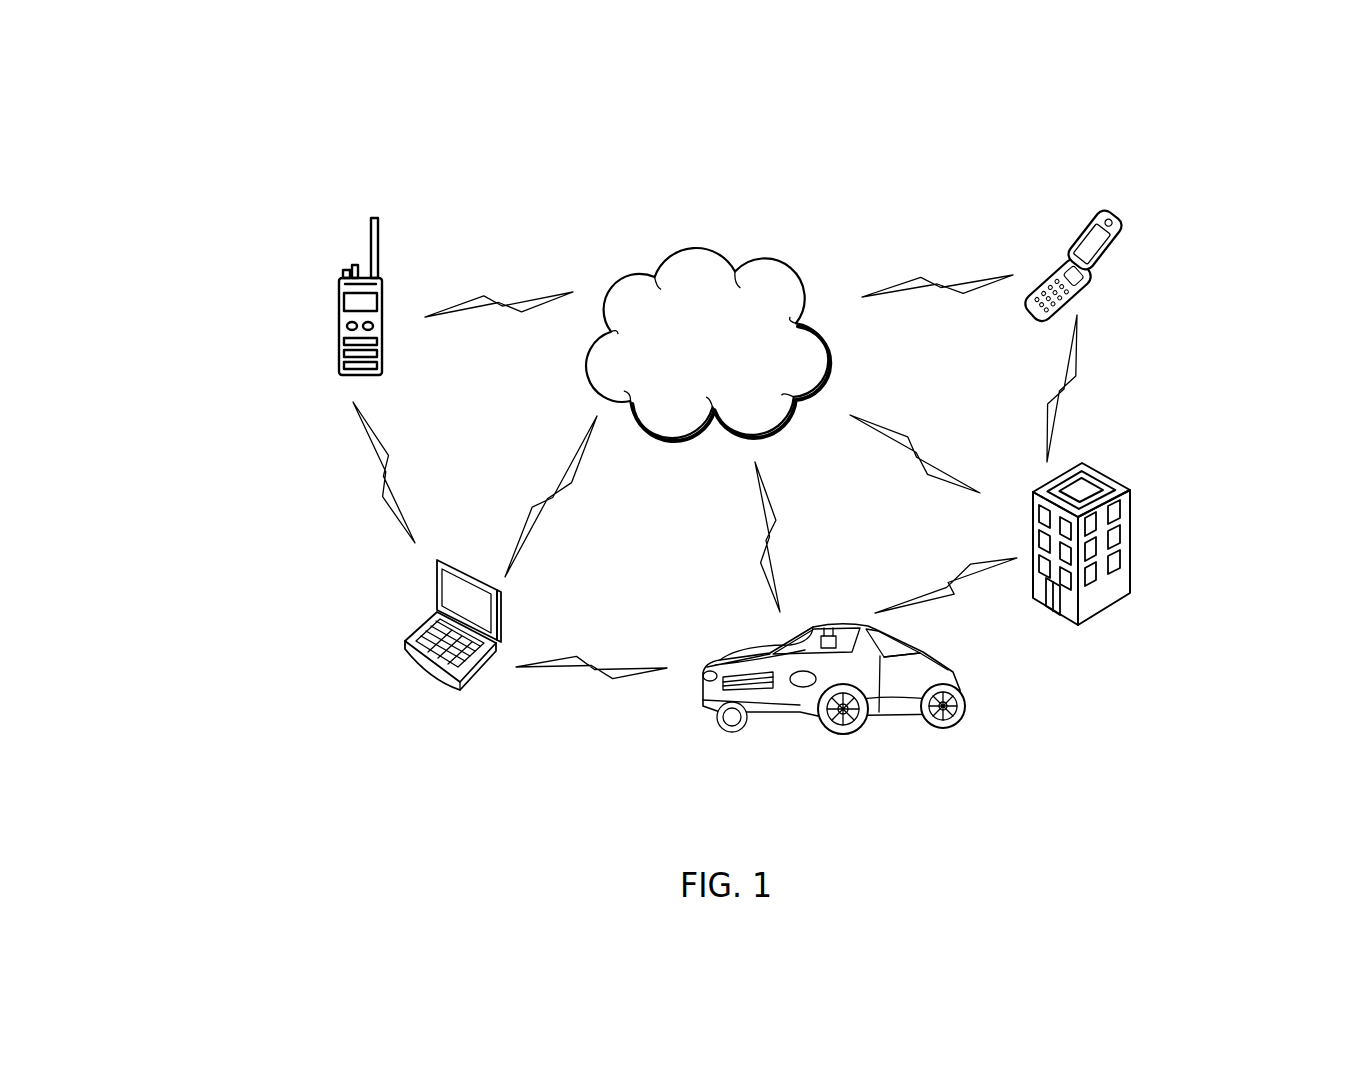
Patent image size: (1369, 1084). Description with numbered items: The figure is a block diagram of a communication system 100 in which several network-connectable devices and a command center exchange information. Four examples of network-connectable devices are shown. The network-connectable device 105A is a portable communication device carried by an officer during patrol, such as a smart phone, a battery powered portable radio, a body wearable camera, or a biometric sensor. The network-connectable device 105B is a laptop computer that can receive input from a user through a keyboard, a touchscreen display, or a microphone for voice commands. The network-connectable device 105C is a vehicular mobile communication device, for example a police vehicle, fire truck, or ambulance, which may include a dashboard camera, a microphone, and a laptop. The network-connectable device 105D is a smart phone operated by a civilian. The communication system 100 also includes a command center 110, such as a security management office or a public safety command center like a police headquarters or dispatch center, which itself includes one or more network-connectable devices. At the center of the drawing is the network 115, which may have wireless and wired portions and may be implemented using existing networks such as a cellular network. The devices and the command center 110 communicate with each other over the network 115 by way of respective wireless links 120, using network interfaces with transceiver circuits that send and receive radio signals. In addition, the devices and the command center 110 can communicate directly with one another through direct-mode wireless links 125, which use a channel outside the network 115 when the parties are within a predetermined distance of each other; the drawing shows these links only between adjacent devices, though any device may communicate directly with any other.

The communication system 100 is at (266, 160).
The network-connectable device 105A is at (339, 355).
The network-connectable device 105B is at (406, 644).
The network-connectable device 105C is at (890, 708).
The network-connectable device 105D is at (1105, 283).
The command center 110 is at (1131, 552).
The network 115 is at (589, 372).
The wireless links 120 is at (531, 292).
The direct-mode wireless links 125 is at (368, 452).